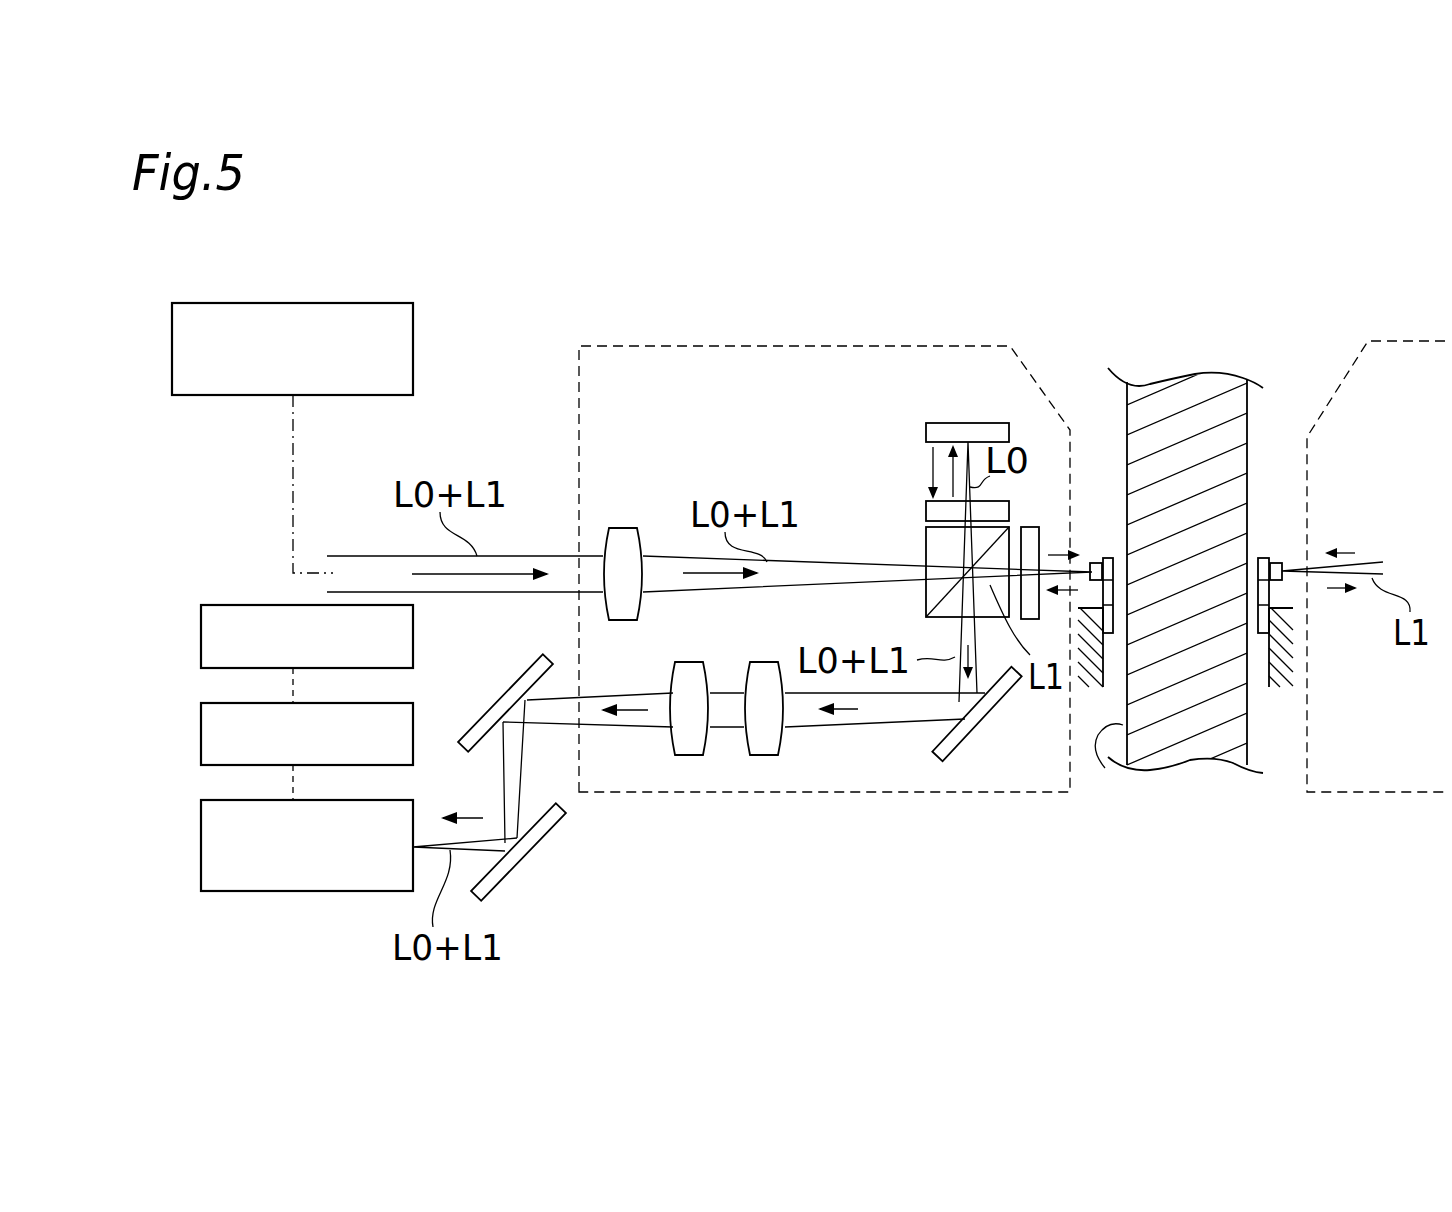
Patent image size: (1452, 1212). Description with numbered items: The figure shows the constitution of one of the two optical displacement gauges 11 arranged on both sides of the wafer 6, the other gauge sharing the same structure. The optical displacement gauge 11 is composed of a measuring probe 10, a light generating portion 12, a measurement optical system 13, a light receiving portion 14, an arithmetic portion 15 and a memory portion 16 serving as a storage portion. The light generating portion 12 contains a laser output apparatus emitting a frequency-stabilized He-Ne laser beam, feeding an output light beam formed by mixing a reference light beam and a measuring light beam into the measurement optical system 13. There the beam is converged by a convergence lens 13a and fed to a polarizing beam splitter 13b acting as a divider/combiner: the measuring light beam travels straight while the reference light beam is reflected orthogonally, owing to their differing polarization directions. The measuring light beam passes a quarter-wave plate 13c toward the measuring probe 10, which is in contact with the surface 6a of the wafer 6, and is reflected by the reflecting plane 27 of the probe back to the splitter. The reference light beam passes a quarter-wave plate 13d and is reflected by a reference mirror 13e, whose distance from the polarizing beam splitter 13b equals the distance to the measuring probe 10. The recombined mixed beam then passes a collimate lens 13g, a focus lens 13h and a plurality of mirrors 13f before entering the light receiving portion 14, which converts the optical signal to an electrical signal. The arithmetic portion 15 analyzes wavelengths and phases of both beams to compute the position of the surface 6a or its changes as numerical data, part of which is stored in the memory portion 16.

The light generating portion 12 is at (311, 303).
The memory portion 16 is at (201, 642).
The arithmetic portion 15 is at (201, 740).
The light receiving portion 14 is at (238, 893).
The measurement optical system 13 is at (633, 342).
The optical displacement gauge 11 is at (752, 340).
The convergence lens 13a is at (627, 528).
The polarizing beam splitter 13b is at (925, 545).
The λ/4 plate 13c is at (1028, 527).
The λ/4 plate 13d is at (926, 505).
The reference mirror 13e is at (952, 423).
The mirrors 13f is at (508, 688).
The collimate lens 13g is at (765, 755).
The focus lens 13h is at (690, 755).
The reflecting plane 27 is at (1093, 563).
The measuring probe 10 is at (1108, 558).
The wafer 6 is at (1200, 388).
The surface of the wafer 6a is at (1105, 768).